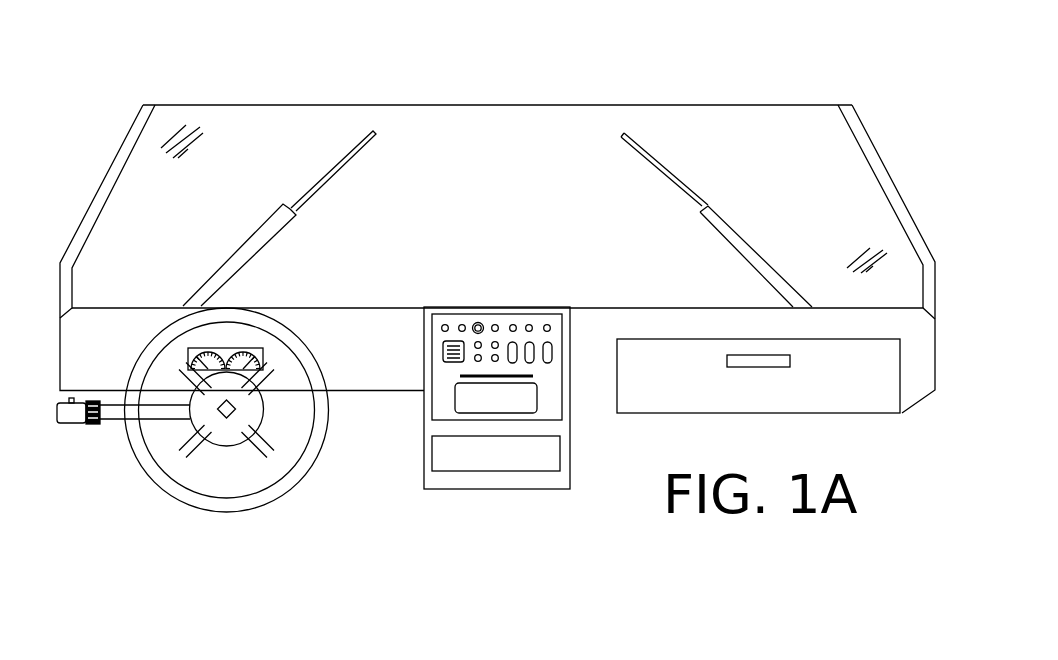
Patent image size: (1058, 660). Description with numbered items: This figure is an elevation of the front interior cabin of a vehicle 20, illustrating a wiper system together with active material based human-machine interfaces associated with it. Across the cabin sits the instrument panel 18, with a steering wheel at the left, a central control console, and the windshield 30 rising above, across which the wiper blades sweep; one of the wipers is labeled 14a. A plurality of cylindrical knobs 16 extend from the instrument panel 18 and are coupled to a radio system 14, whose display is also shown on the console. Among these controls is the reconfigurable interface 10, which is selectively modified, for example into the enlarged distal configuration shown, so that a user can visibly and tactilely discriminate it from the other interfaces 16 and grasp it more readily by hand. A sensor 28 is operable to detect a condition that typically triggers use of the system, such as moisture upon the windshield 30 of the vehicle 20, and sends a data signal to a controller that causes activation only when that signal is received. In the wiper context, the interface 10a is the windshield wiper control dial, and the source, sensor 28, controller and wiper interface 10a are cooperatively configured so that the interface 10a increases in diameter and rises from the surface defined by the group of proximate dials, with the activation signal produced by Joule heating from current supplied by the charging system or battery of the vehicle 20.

The vehicle 20 is at (208, 62).
The windshield 30 is at (520, 182).
The windshield wiper 14a is at (680, 184).
The wiper interface 10a is at (91, 402).
The instrument panel 18 is at (566, 306).
The interface 10 is at (479, 322).
The sensor 28 is at (446, 362).
The radio system 14 is at (444, 409).
The cylindrical knobs 16 is at (551, 352).